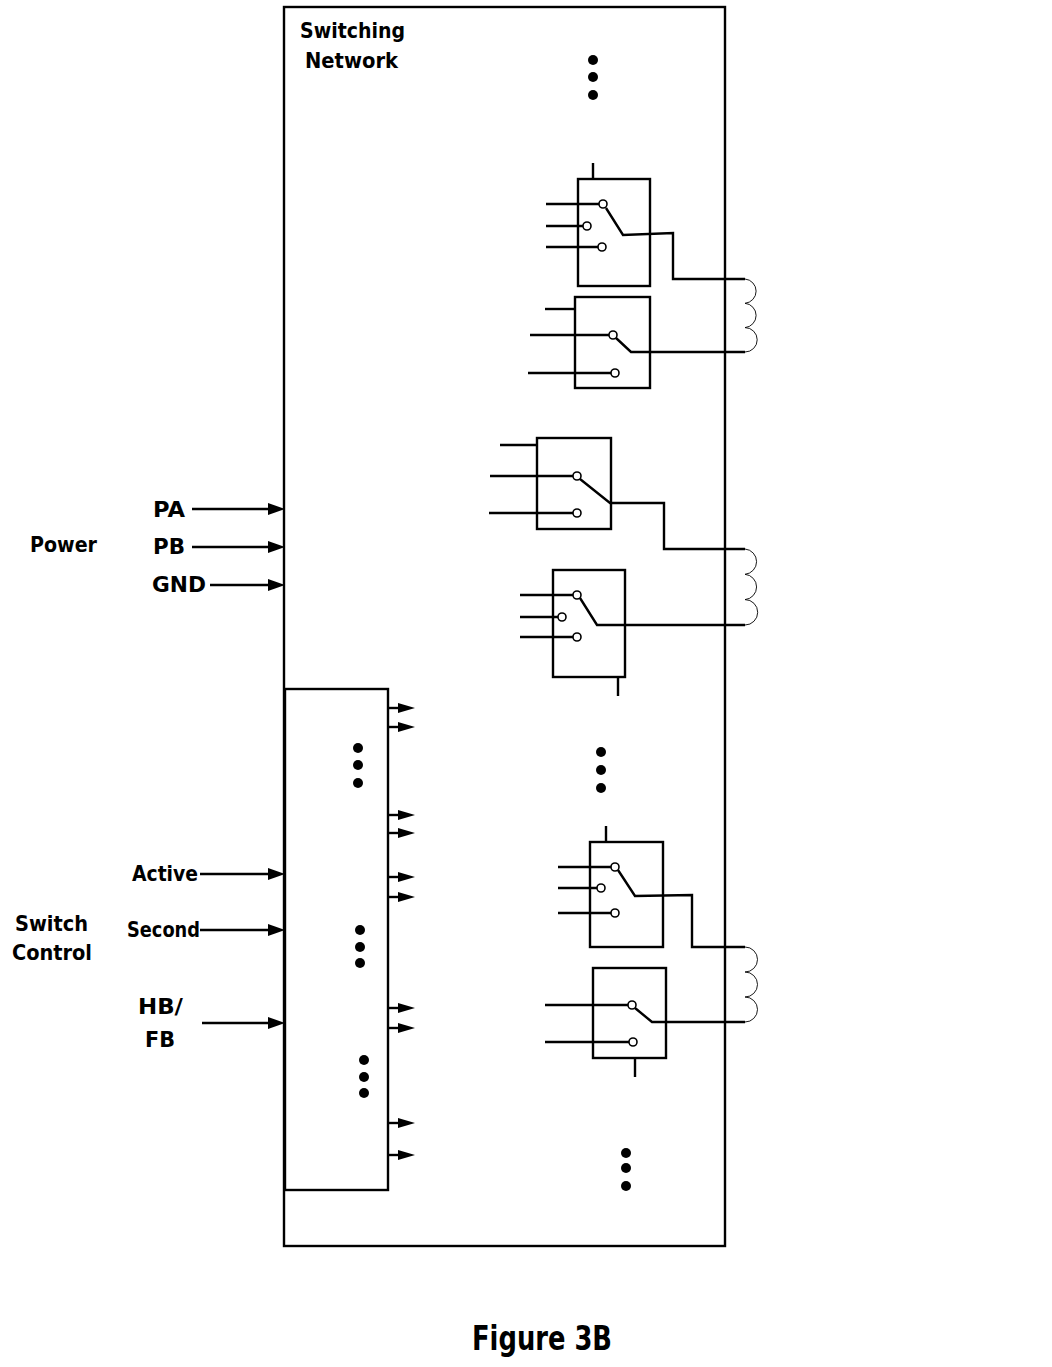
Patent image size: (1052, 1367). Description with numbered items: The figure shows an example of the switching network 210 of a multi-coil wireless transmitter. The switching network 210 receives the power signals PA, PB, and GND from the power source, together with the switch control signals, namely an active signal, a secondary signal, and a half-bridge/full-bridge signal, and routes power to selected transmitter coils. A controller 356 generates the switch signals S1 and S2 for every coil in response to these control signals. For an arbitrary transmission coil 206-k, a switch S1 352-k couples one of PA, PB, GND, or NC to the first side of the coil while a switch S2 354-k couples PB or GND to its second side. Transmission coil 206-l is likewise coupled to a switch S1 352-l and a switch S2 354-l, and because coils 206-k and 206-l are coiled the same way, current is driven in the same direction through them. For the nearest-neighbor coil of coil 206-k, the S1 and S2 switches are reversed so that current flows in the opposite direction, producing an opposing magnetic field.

The switching network 210 is at (345, 442).
The controller 356 is at (315, 708).
The switch S1 352-k is at (578, 179).
The switch S2 354-k is at (648, 377).
The transmission coil 206-k is at (743, 297).
The switch S1 352-l is at (682, 825).
The switch S2 354-l is at (610, 1049).
The transmission coil 206-l is at (762, 965).